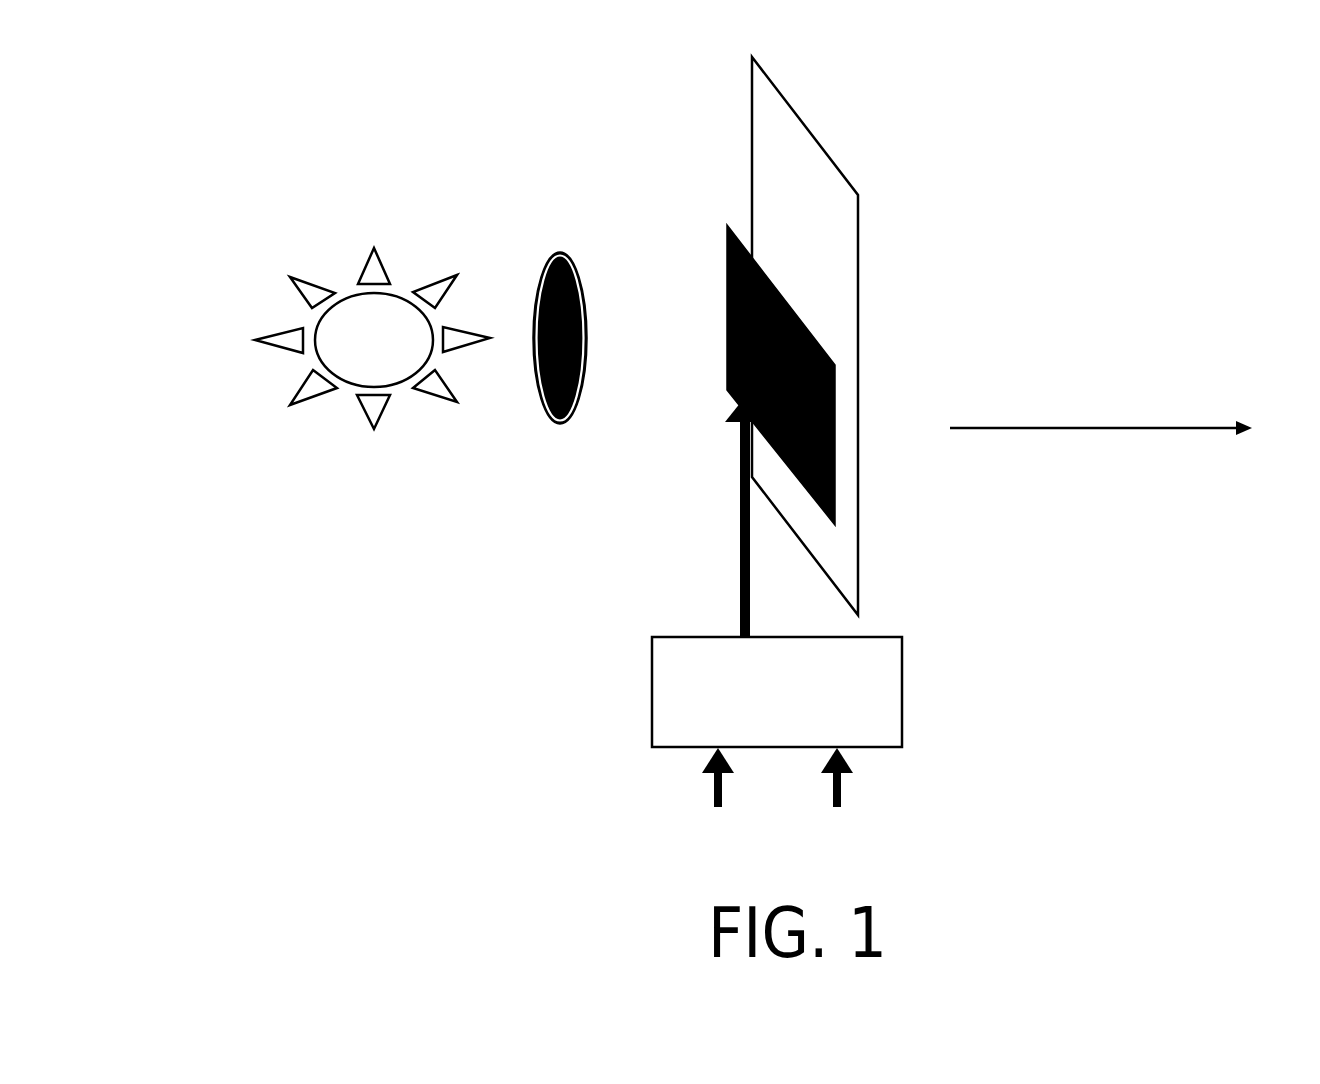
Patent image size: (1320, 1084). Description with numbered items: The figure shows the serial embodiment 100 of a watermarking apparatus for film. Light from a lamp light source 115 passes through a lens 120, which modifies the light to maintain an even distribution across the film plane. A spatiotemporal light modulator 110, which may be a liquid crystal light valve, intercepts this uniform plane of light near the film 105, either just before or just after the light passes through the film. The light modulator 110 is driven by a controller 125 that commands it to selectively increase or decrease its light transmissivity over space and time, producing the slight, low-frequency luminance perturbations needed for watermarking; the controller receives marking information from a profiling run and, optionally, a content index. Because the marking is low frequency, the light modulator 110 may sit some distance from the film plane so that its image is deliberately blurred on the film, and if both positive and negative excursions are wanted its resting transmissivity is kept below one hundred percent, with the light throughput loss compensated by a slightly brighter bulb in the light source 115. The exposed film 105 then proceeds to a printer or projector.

The serial embodiment 100 is at (1252, 107).
The film 105 is at (752, 110).
The spatiotemporal light modulator 110 is at (727, 262).
The light source 115 is at (307, 326).
The lens 120 is at (543, 262).
The controller 125 is at (652, 677).